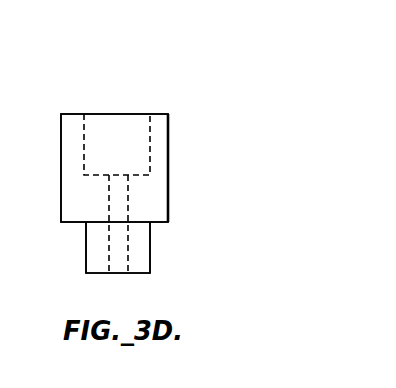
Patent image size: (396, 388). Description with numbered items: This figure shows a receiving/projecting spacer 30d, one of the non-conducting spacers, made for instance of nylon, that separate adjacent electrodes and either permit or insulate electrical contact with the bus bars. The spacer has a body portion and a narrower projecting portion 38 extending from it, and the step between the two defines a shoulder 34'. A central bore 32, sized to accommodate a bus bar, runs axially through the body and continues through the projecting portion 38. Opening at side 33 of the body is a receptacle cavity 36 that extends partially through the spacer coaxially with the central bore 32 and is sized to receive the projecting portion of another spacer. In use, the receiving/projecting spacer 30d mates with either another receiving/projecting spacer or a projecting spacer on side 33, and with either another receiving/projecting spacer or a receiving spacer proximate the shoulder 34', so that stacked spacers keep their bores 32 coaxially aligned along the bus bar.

The receiving/projecting spacer 30d is at (223, 104).
The side 33 is at (162, 114).
The receptacle cavity 36 is at (111, 135).
The shoulder 34' is at (145, 247).
The projecting portion 38 is at (145, 263).
The central bore 32 is at (117, 265).